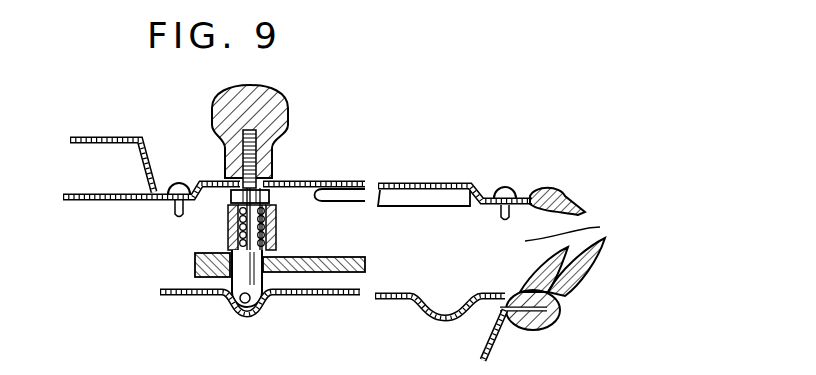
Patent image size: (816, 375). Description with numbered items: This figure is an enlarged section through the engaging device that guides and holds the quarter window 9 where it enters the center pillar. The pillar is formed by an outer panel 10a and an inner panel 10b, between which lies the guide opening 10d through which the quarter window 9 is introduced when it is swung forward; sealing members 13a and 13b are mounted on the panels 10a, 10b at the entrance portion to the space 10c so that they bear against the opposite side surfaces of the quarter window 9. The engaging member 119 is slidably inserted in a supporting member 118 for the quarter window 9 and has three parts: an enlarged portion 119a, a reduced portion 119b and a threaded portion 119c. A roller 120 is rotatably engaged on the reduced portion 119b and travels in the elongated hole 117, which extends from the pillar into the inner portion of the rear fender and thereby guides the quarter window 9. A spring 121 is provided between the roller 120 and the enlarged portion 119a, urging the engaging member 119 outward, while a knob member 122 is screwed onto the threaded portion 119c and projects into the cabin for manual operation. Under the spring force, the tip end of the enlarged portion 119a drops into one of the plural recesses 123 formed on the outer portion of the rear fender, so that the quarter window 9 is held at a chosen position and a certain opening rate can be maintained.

The quarter window 9 is at (366, 265).
The outer panel 10a is at (492, 353).
The inner panel 10b is at (487, 186).
The space 10c is at (123, 230).
The guide opening 10d is at (600, 227).
The sealing member 13a is at (570, 298).
The sealing member 13b is at (566, 210).
The elongated hole 117 is at (340, 200).
The supporting member 118 is at (277, 238).
The engaging member 119 is at (272, 284).
The enlarged portion 119a is at (226, 302).
The reduced portion 119b is at (242, 228).
The threaded portion 119c is at (273, 143).
The roller 120 is at (278, 198).
The spring 121 is at (279, 212).
The knob member 122 is at (224, 101).
The recess 123 is at (246, 303).